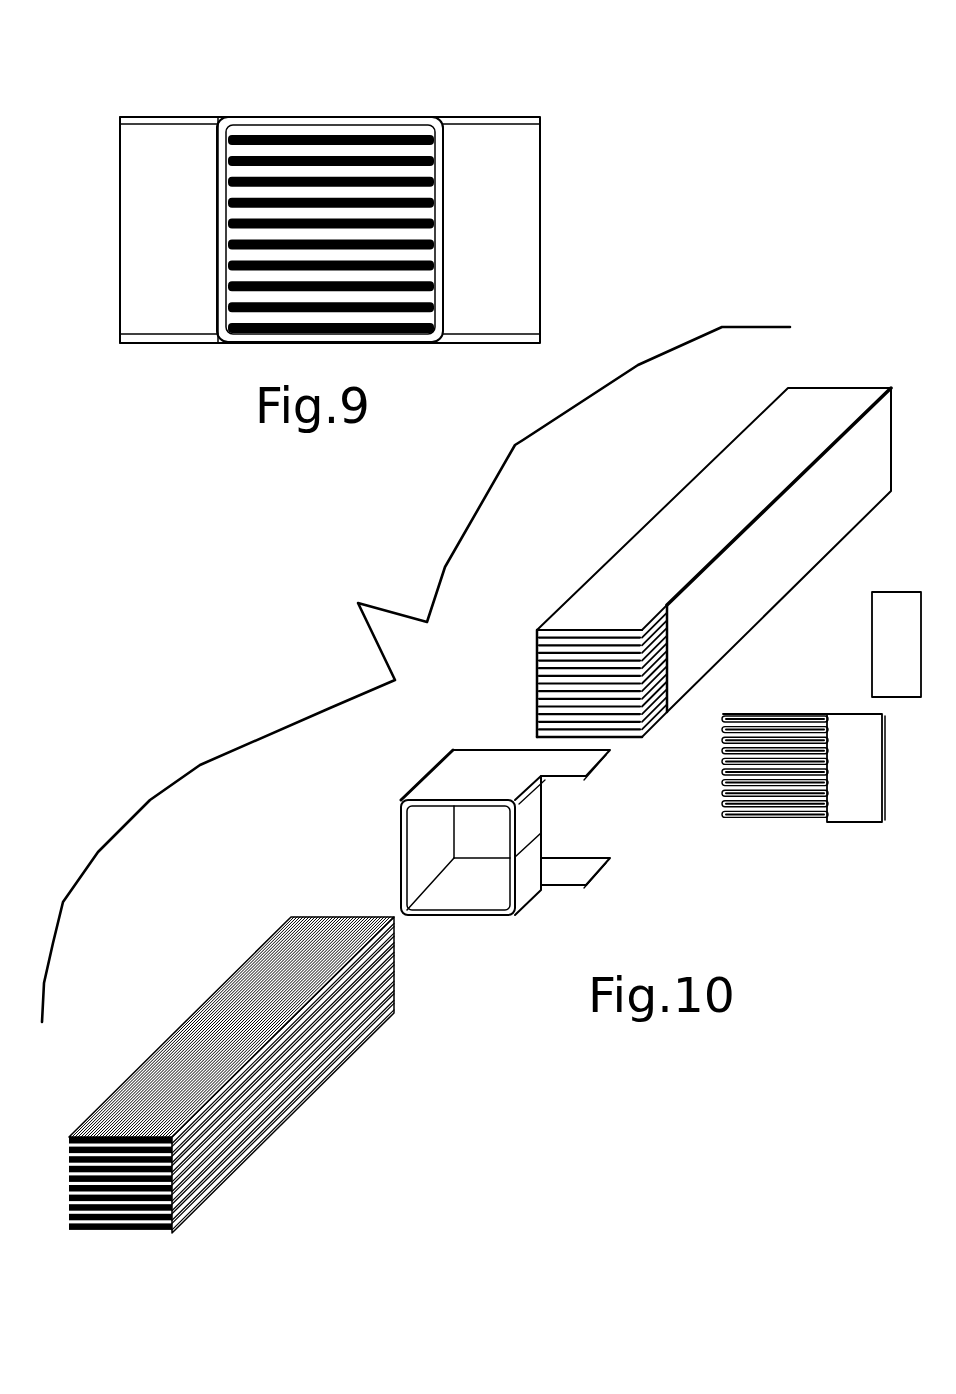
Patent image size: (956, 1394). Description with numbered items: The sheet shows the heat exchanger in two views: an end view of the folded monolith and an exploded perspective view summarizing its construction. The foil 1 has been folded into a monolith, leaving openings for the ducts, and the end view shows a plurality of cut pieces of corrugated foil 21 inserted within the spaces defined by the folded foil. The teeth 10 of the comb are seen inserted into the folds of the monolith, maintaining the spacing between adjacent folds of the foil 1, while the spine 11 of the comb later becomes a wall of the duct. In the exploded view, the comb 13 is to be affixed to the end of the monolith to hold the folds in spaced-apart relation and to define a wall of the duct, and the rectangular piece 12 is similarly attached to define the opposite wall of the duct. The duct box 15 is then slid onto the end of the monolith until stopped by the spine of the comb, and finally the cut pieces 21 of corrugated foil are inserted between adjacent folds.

In FIG. 10, the foil 1 is at (688, 527).
In FIG. 9, the teeth 10 is at (378, 173).
In FIG. 9, the spine 11 is at (510, 253).
In FIG. 9, the rectangular piece 12 is at (165, 213).
In FIG. 10, the rectangular piece 12 is at (891, 641).
In FIG. 10, the comb 13 is at (855, 822).
In FIG. 10, the duct box 15 is at (470, 905).
In FIG. 9, the cut pieces of corrugated foil 21 is at (308, 173).
In FIG. 10, the cut pieces of corrugated foil 21 is at (75, 1178).